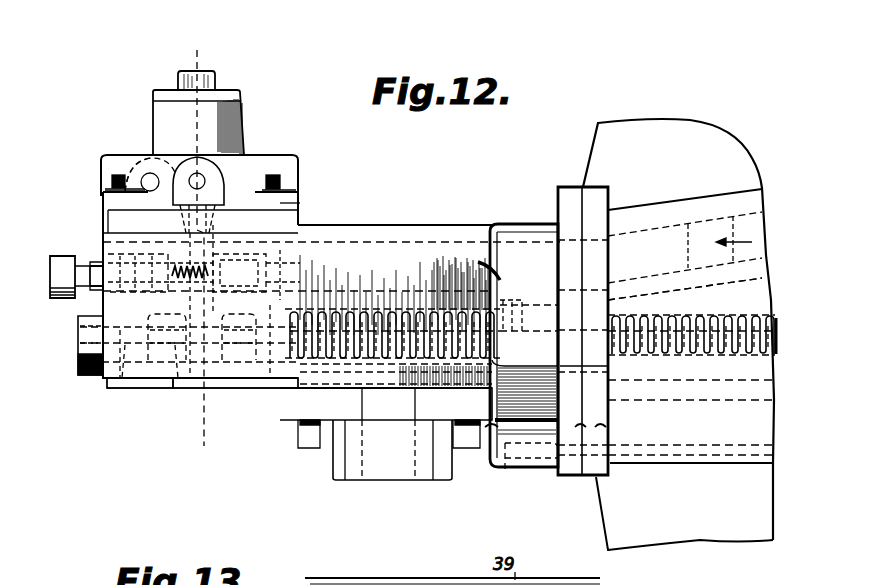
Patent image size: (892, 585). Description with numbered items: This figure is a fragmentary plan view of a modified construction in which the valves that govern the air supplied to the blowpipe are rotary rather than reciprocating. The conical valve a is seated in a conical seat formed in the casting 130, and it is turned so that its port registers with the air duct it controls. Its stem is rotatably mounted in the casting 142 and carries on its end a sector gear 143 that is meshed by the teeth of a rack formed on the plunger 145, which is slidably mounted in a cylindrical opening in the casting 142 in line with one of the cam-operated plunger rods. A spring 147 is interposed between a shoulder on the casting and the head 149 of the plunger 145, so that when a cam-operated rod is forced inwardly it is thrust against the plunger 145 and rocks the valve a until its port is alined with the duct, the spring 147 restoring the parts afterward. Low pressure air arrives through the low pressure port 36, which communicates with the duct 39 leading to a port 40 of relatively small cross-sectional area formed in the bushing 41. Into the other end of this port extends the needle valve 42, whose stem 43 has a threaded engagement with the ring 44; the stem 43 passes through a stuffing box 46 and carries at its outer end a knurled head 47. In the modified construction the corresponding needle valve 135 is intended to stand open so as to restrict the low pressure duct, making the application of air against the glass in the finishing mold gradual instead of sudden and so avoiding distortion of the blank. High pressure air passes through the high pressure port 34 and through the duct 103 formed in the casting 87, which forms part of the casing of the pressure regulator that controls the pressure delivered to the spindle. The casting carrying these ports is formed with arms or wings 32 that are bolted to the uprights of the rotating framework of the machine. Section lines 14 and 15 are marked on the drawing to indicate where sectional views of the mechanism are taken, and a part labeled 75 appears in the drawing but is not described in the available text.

The section line / axis of adjusting screw 15 is at (210, 47).
The conical valve a is at (134, 157).
The casting 130 is at (300, 203).
The knurled head 47 is at (62, 262).
The stuffing box 46 is at (141, 270).
The stem 43 is at (168, 303).
The needle valve 135 is at (220, 274).
The needle valve 42 is at (240, 305).
The port 40 is at (283, 275).
The section line 14 is at (67, 338).
The plunger 145 is at (124, 378).
The sector gear 143 is at (175, 378).
The casting 142 is at (424, 225).
The spring 147 is at (344, 304).
The casting 87 is at (338, 462).
The duct 103 is at (410, 481).
The duct 39 is at (516, 225).
The head 149 is at (529, 300).
The arms or wings 32 is at (665, 130).
The high pressure port 34 is at (670, 232).
The bushing 41 is at (722, 308).
The spring 75 is at (660, 353).
The ring 44 is at (787, 336).
The low pressure port 36 is at (706, 447).